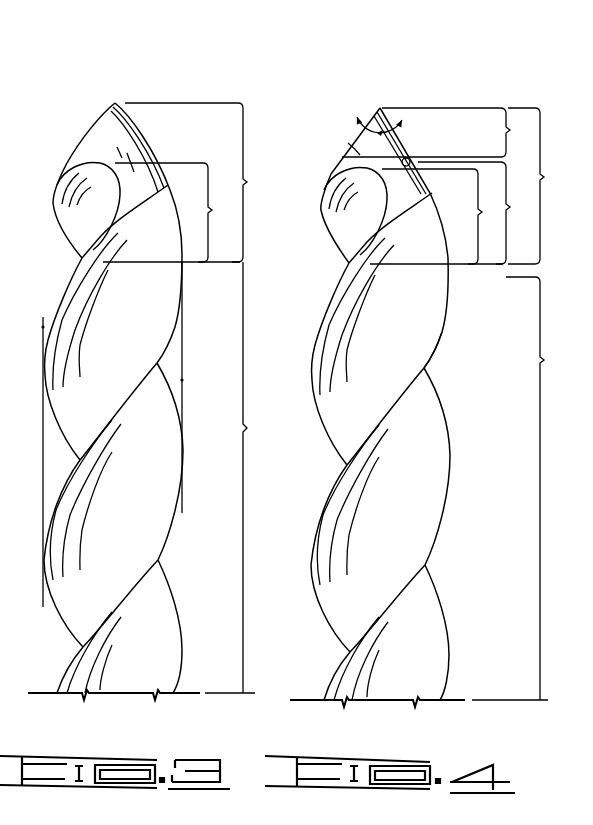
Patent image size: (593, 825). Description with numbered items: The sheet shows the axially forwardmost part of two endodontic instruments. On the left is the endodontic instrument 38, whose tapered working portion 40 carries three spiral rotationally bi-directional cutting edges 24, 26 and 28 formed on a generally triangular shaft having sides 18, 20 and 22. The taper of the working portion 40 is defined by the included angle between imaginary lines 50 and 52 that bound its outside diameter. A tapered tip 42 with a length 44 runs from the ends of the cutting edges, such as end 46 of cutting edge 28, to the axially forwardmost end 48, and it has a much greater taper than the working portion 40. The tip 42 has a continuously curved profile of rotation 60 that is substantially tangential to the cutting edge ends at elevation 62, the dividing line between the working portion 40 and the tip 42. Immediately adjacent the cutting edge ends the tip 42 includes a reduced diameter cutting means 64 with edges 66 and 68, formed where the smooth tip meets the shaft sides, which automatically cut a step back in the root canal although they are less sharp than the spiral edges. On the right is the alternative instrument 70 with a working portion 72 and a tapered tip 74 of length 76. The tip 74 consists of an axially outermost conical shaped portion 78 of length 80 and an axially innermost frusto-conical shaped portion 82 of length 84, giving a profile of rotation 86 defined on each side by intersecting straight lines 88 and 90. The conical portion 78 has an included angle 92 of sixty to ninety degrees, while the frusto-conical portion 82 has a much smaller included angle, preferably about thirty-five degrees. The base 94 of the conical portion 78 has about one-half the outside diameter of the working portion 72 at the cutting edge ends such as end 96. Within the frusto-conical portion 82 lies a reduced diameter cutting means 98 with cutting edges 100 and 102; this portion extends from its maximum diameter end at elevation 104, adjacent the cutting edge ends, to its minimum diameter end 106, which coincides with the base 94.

In FIG. 3, the side of the generally triangular shaped shaft 18 is at (64, 218).
In FIG. 4, the side of the generally triangular shaped shaft 18 is at (430, 666).
In FIG. 3, the side of the generally triangular shaped shaft 20 is at (155, 499).
In FIG. 4, the side of the generally triangular shaped shaft 20 is at (426, 494).
In FIG. 3, the side of the generally triangular shaped shaft 22 is at (153, 325).
In FIG. 4, the side of the generally triangular shaped shaft 22 is at (415, 339).
In FIG. 3, the spiral rotationally bi-directional cutting edge 24 is at (107, 624).
In FIG. 4, the spiral rotationally bi-directional cutting edge 24 is at (374, 630).
In FIG. 3, the spiral rotationally bi-directional cutting edge 26 is at (107, 426).
In FIG. 4, the spiral rotationally bi-directional cutting edge 26 is at (374, 453).
In FIG. 3, the spiral rotationally bi-directional cutting edge 28 is at (73, 283).
In FIG. 4, the spiral rotationally bi-directional cutting edge 28 is at (337, 293).
In FIG. 3, the endodontic instrument 38 is at (156, 119).
In FIG. 3, the tapered working portion 40 is at (240, 477).
In FIG. 3, the tapered tip 42 is at (108, 112).
In FIG. 3, the length of the tapered tip 44 is at (198, 182).
In FIG. 3, the end of cutting edge 46 is at (78, 256).
In FIG. 3, the axially forwardmost end of the tapered tip 48 is at (116, 103).
In FIG. 3, the imaginary line defining the outside diameter of the working portion 50 is at (183, 380).
In FIG. 3, the imaginary line defining the outside diameter of the working portion 52 is at (41, 327).
In FIG. 3, the curved profile of rotation 60 is at (89, 128).
In FIG. 3, the elevation 62 is at (221, 259).
In FIG. 3, the reduced diameter cutting means 64 is at (176, 212).
In FIG. 3, the cutting edge of the reduced diameter cutting means 66 is at (117, 184).
In FIG. 3, the cutting edge of the reduced diameter cutting means 68 is at (136, 222).
In FIG. 4, the instrument 70 is at (437, 100).
In FIG. 4, the working portion 72 is at (519, 488).
In FIG. 4, the tapered tip 74 is at (342, 155).
In FIG. 4, the length of the tapered tip 76 is at (539, 186).
In FIG. 4, the axially outermost conical shaped portion 78 is at (356, 138).
In FIG. 4, the length of the conical shaped portion 80 is at (438, 132).
In FIG. 4, the axially innermost frusto-conical shaped portion 82 is at (342, 155).
In FIG. 4, the length of the frusto-conical shaped portion 84 is at (477, 213).
In FIG. 4, the profile of rotation 86 is at (348, 143).
In FIG. 4, the straight line 88 is at (348, 143).
In FIG. 4, the straight line 90 is at (335, 178).
In FIG. 4, the included angle 92 is at (344, 153).
In FIG. 4, the base of the conical shaped portion 94 is at (424, 156).
In FIG. 4, the end of cutting edge 96 is at (362, 258).
In FIG. 4, the reduced diameter cutting means 98 is at (443, 216).
In FIG. 4, the cutting edge 100 is at (355, 211).
In FIG. 4, the cutting edge 102 is at (393, 232).
In FIG. 4, the elevation 104 is at (490, 268).
In FIG. 4, the minimum outside diameter end 106 is at (401, 120).